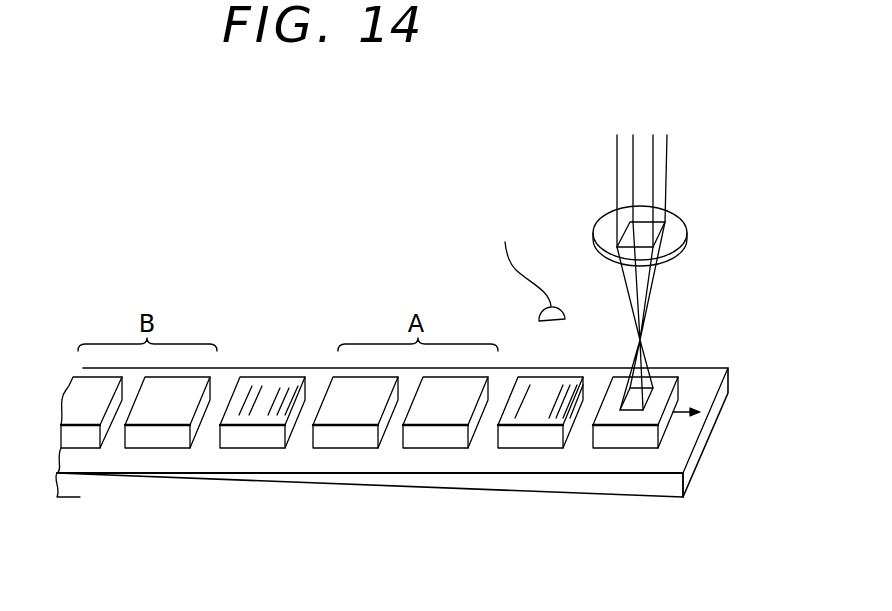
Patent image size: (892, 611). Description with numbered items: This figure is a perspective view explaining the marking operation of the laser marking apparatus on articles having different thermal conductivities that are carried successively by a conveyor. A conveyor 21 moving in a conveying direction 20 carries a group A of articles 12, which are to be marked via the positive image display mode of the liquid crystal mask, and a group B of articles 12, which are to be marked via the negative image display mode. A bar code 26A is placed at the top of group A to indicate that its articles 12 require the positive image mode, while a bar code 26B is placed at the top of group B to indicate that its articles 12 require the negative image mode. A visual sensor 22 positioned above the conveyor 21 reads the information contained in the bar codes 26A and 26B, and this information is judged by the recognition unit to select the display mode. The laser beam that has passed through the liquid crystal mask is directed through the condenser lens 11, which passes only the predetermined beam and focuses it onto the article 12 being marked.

The condenser lens 11 is at (668, 265).
The article 12 is at (82, 449).
The conveying direction 20 is at (681, 418).
The conveyor 21 is at (568, 500).
The visual sensor 22 is at (566, 311).
The bar code 26A is at (547, 378).
The bar code 26B is at (263, 378).